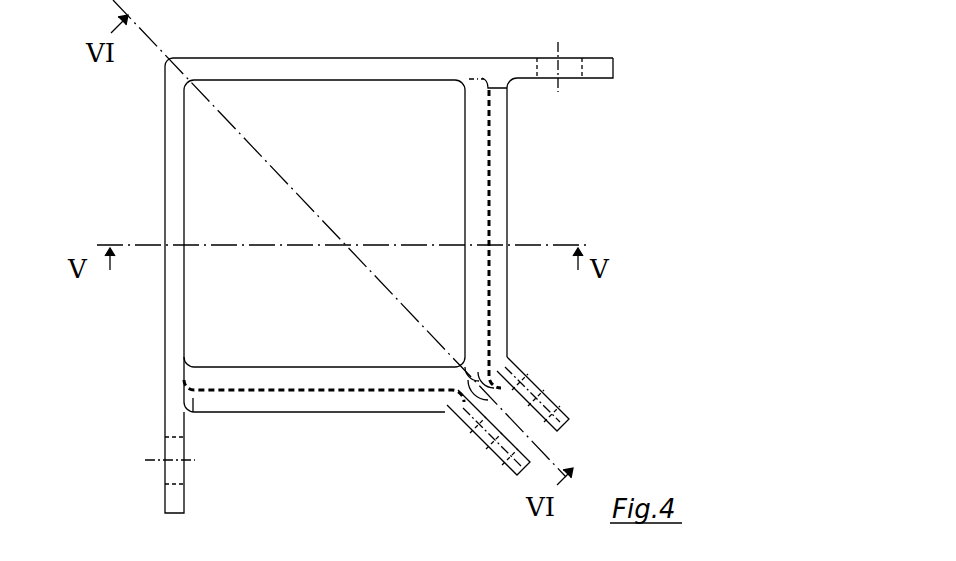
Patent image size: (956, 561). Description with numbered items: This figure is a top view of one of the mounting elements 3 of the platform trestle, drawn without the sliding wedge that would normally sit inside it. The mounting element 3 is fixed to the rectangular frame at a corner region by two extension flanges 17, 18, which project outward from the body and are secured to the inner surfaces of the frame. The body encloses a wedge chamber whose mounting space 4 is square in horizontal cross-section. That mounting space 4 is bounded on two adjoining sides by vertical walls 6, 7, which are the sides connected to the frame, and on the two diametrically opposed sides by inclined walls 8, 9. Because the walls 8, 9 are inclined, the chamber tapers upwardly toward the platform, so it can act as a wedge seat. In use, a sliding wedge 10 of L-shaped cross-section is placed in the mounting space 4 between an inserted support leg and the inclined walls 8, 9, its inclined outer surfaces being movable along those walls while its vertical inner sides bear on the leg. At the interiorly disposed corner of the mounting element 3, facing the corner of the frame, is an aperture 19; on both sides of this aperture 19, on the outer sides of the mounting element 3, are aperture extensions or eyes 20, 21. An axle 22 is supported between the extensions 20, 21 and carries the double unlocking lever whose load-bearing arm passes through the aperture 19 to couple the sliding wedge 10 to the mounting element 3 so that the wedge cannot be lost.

The mounting element 3 is at (349, 50).
The mounting space 4 is at (200, 290).
The vertical wall 6 is at (290, 62).
The vertical wall 7 is at (173, 150).
The inclined wall 8 is at (358, 403).
The inclined wall 9 is at (497, 207).
The sliding wedge 10 is at (477, 155).
The extension flange 17 is at (596, 66).
The extension flange 18 is at (173, 497).
The aperture 19 is at (510, 363).
The aperture extension 20 is at (503, 448).
The aperture extension 21 is at (558, 412).
The axle 22 is at (538, 380).